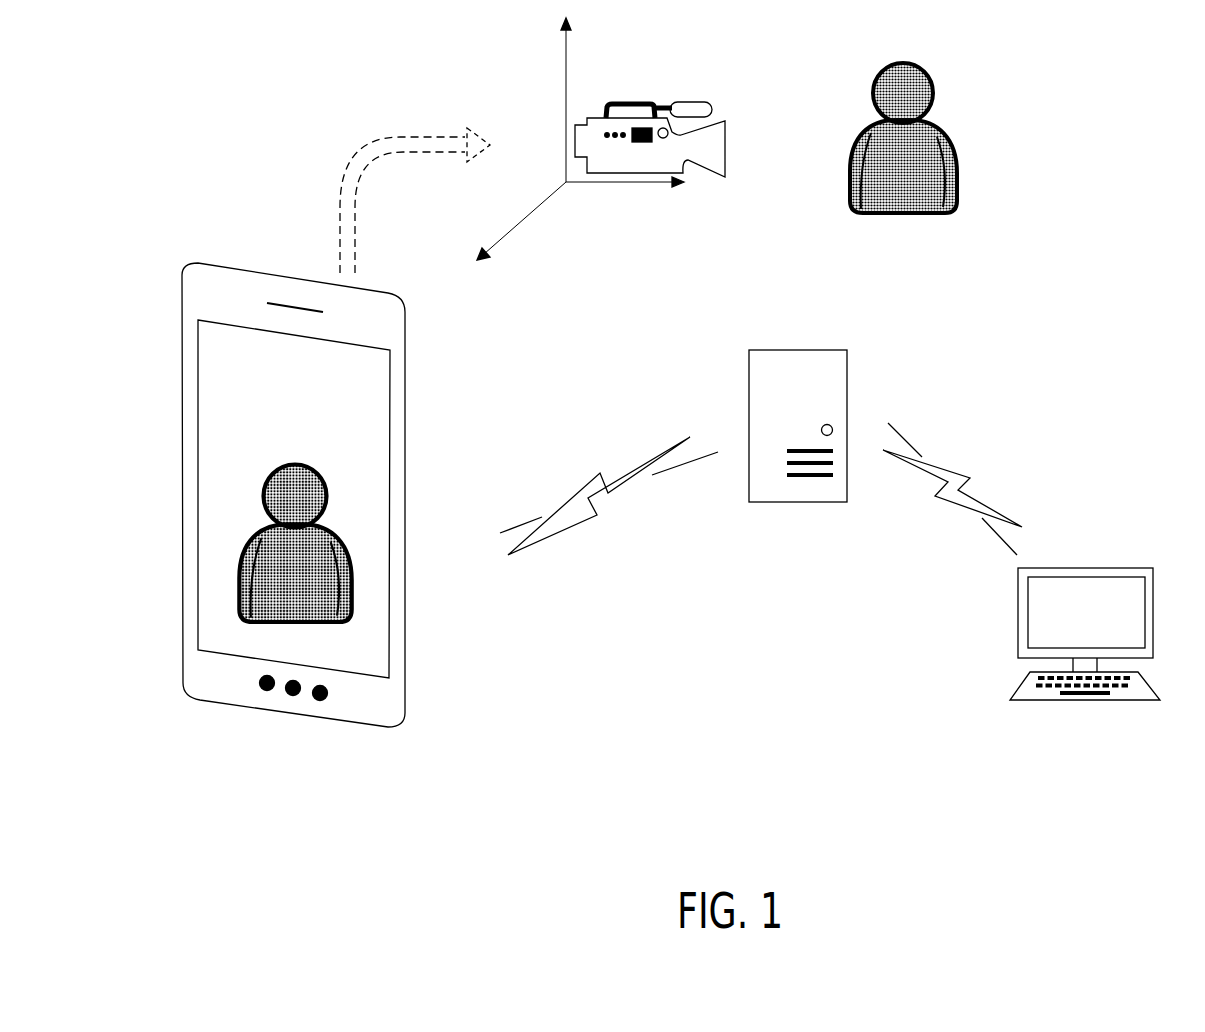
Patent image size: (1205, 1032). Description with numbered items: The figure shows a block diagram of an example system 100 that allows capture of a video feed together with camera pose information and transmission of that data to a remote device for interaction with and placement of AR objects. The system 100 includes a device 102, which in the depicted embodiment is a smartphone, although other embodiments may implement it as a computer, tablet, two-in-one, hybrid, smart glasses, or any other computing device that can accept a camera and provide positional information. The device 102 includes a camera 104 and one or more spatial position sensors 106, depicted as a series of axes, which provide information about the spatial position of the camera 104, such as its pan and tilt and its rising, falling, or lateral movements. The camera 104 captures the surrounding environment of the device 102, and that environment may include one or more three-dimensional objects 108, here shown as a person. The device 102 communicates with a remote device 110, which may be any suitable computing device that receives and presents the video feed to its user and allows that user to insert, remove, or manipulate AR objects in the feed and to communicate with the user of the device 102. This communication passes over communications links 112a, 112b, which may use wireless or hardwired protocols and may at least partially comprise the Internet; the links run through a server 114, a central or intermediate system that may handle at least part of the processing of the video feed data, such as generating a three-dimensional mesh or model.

The system 100 is at (300, 95).
The device 102 is at (418, 422).
The camera 104 is at (707, 100).
The spatial position sensors 106 is at (556, 234).
The three-dimensional objects 108 is at (943, 126).
The remote device 110 is at (1125, 567).
The communications link 112a is at (646, 560).
The communications link 112b is at (932, 546).
The server 114 is at (818, 538).